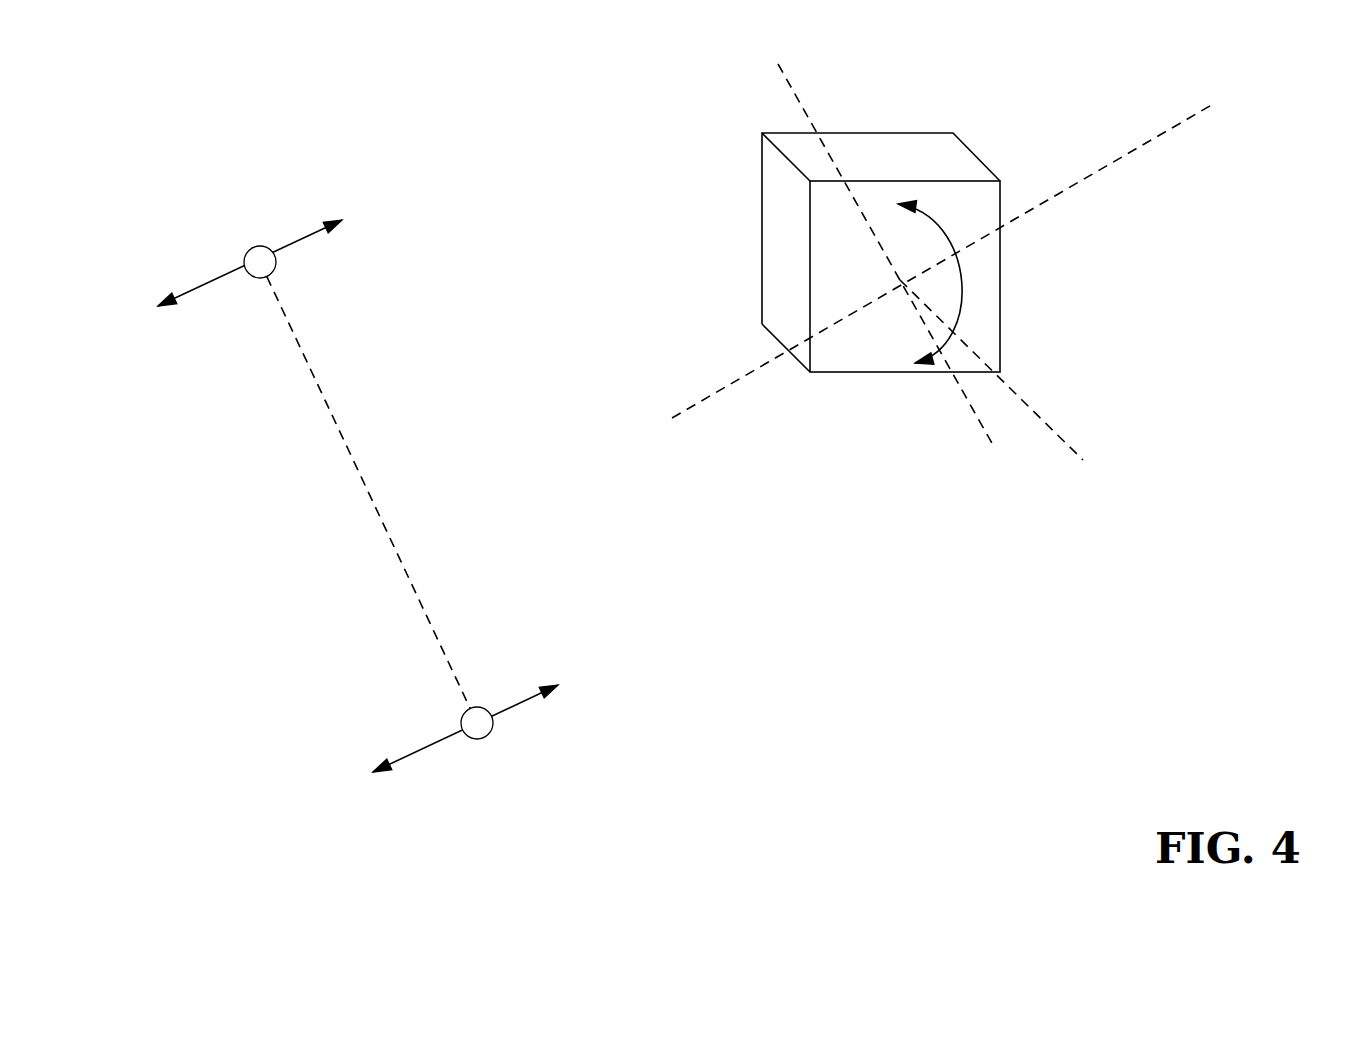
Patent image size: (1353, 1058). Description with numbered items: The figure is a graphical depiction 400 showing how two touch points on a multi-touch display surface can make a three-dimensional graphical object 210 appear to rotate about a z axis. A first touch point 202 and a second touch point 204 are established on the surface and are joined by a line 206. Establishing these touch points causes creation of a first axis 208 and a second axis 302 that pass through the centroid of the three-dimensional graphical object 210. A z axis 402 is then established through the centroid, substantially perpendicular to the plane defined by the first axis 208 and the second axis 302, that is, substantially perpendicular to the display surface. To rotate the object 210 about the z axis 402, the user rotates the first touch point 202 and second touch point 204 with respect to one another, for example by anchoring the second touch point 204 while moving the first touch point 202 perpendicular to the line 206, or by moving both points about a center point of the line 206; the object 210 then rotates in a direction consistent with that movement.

The first touch point 202 is at (277, 263).
The second touch point 204 is at (487, 738).
The line 206 is at (367, 483).
The first axis 208 is at (798, 100).
The three-dimensional graphical object 210 is at (762, 208).
The second axis 302 is at (698, 402).
The graphical depiction 400 is at (945, 98).
The z axis 402 is at (1038, 378).